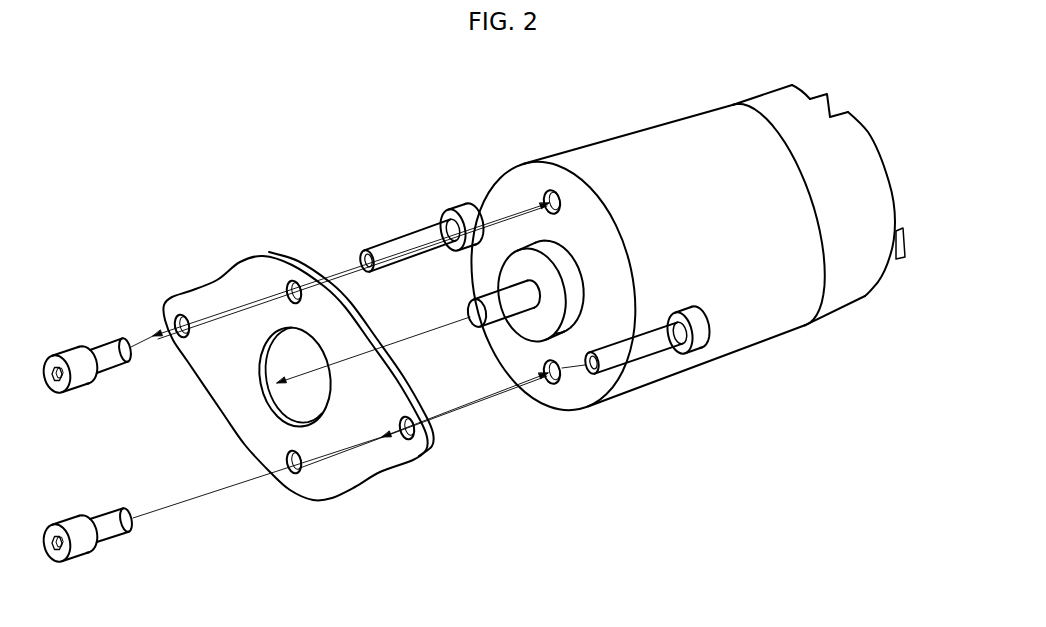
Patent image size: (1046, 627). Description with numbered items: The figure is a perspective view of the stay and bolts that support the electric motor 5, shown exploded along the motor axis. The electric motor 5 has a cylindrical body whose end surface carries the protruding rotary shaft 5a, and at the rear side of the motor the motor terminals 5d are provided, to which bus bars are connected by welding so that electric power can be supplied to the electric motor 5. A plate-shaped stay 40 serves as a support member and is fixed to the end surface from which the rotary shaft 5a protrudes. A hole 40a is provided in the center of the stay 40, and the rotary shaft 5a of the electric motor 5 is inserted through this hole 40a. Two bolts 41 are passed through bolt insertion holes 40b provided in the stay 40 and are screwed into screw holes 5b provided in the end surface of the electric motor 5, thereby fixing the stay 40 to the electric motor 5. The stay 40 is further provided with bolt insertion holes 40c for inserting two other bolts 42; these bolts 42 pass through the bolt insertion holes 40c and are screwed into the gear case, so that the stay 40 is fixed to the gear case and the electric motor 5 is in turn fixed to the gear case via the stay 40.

The electric motor 5 is at (653, 138).
The rotary shaft 5a is at (488, 300).
The screw holes 5b is at (540, 195).
The motor terminals 5d is at (905, 246).
The stay 40 is at (210, 363).
The hole 40a is at (267, 400).
The bolt insertion holes 40b is at (287, 283).
The bolt insertion holes 40c is at (173, 320).
The bolts 41 is at (108, 352).
The bolts 42 is at (407, 243).